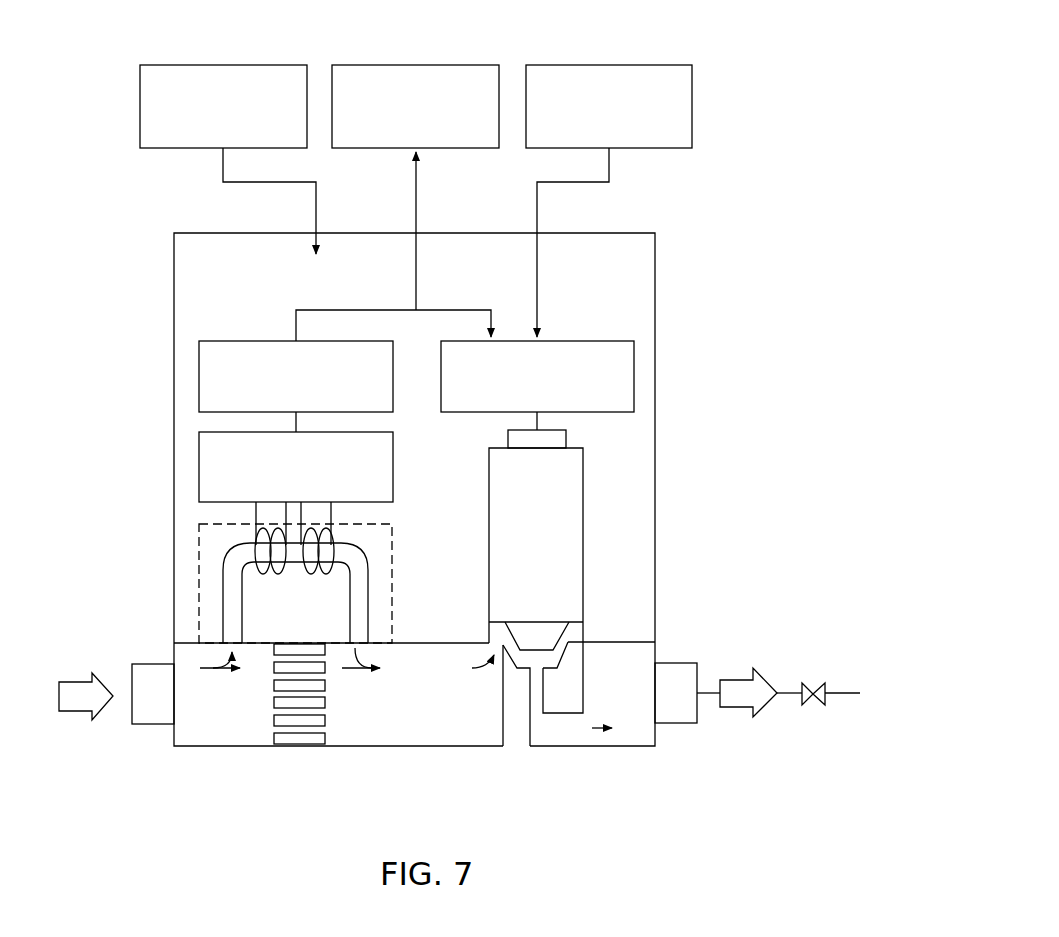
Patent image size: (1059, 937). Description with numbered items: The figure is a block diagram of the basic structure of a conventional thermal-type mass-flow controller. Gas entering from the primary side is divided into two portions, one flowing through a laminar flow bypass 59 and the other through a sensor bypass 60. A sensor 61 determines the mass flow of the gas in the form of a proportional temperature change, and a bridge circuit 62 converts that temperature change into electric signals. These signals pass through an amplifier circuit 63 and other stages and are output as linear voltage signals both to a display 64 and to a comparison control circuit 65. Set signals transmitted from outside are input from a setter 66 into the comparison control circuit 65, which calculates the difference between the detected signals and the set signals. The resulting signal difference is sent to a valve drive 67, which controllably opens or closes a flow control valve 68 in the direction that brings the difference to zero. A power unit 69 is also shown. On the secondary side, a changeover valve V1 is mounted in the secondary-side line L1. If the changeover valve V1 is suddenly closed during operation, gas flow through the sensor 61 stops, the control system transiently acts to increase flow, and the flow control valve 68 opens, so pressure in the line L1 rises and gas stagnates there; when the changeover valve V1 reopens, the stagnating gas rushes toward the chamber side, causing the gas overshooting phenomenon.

The laminar flow bypass 59 is at (298, 734).
The sensor bypass 60 is at (232, 608).
The sensor 61 is at (243, 555).
The bridge circuit 62 is at (370, 458).
The amplifier circuit 63 is at (244, 352).
The display 64 is at (418, 78).
The comparison control circuit 65 is at (586, 352).
The setter 66 is at (608, 78).
The valve drive 67 is at (556, 510).
The flow control valve 68 is at (540, 630).
The power unit 69 is at (232, 78).
The secondary-side line L1 is at (740, 675).
The changeover valve V1 is at (806, 683).